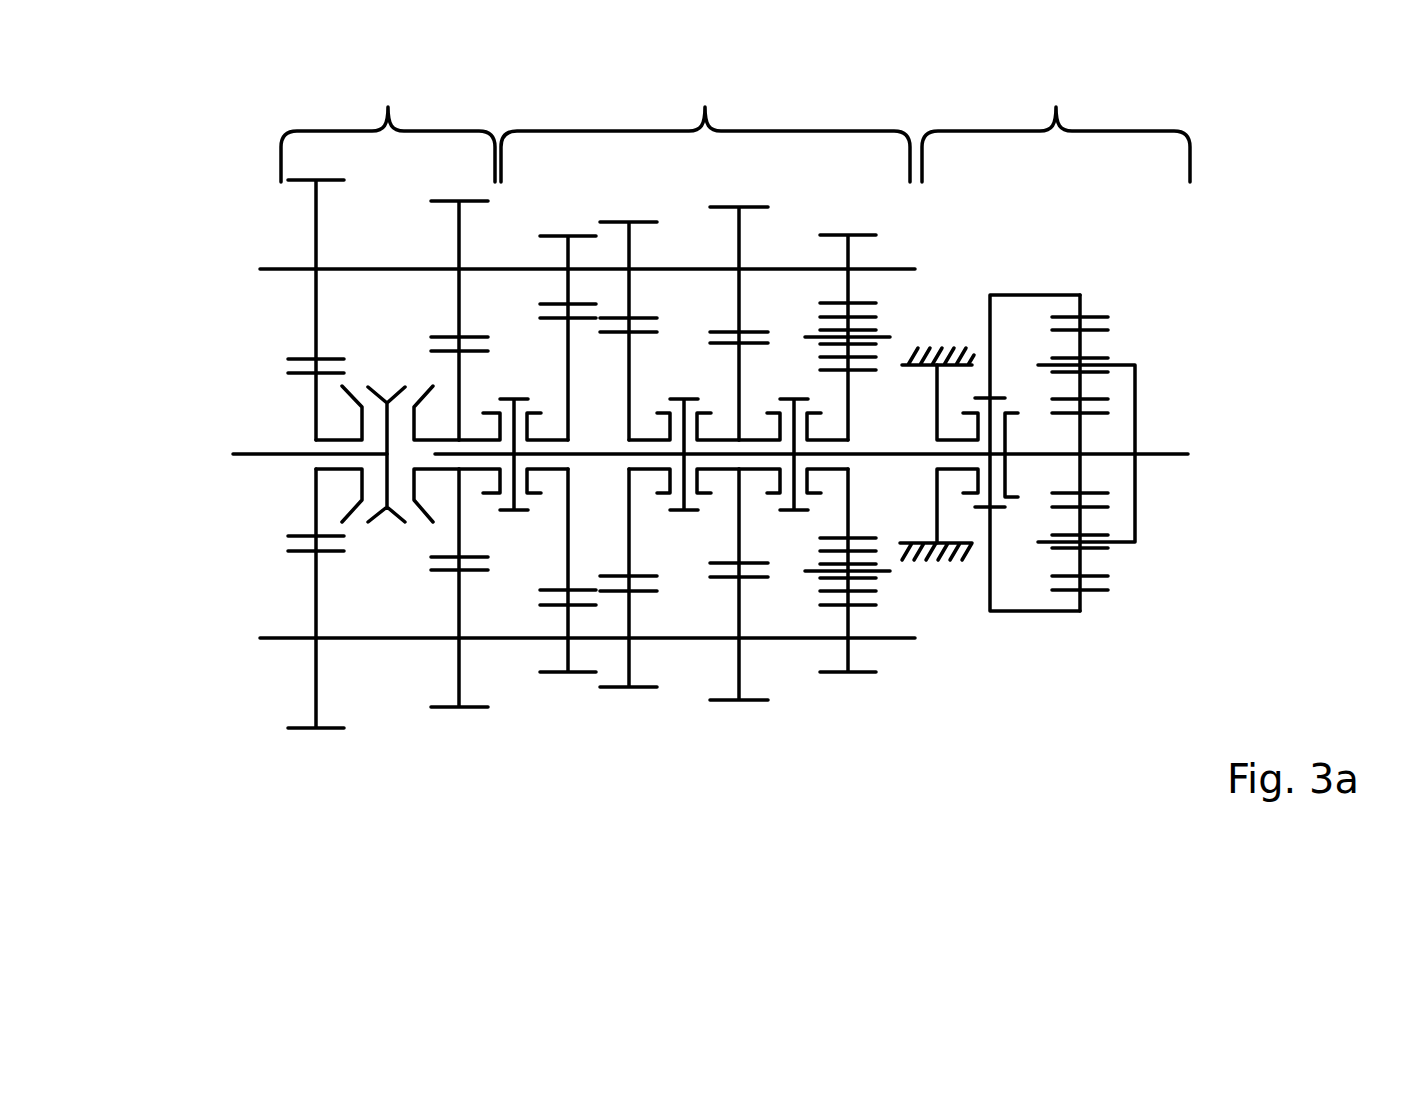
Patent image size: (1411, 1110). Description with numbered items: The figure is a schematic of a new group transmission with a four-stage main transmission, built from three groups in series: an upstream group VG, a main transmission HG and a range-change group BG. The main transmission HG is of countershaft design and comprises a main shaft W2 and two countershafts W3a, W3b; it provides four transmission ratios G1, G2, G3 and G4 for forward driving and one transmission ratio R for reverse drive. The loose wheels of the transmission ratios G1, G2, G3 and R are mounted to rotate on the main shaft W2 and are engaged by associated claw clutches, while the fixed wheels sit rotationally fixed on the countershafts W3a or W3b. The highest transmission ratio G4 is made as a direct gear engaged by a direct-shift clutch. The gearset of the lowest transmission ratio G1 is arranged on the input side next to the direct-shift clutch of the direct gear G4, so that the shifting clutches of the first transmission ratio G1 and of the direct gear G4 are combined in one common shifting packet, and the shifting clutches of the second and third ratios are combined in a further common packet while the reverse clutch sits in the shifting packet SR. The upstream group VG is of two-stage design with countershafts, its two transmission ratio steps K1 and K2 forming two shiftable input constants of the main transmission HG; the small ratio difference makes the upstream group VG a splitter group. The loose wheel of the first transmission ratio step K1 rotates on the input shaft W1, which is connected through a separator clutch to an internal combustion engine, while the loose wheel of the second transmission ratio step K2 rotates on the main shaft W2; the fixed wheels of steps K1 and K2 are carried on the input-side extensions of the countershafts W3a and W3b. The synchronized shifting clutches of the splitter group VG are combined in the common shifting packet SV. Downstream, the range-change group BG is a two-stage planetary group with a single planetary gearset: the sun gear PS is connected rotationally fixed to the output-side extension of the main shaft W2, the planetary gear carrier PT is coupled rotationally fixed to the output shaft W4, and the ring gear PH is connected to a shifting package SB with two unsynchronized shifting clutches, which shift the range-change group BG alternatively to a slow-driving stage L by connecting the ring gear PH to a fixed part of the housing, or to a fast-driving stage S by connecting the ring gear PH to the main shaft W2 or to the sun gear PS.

The upstream group VG is at (388, 132).
The main transmission HG is at (705, 132).
The range-change group BG is at (1056, 132).
The input shaft W1 is at (283, 457).
The main shaft W2 is at (600, 454).
The countershaft W3a is at (289, 271).
The countershaft W3b is at (289, 641).
The output shaft W4 is at (1153, 455).
The first transmission ratio step K1 is at (311, 454).
The second transmission ratio step K2 is at (452, 454).
The first transmission ratio G1 is at (568, 439).
The second transmission ratio G2 is at (628, 440).
The third transmission ratio G3 is at (739, 439).
The fourth transmission ratio G4 is at (468, 429).
The reverse transmission ratio R is at (847, 439).
The shifting packet SV is at (387, 439).
The shifting packet SR is at (793, 441).
The shifting package SB is at (1027, 453).
The slow-driving stage L is at (939, 454).
The fast-driving stage S is at (1036, 498).
The ring gear PH is at (1037, 295).
The planetary gear carrier PT is at (1118, 365).
The sun gear PS is at (1080, 443).